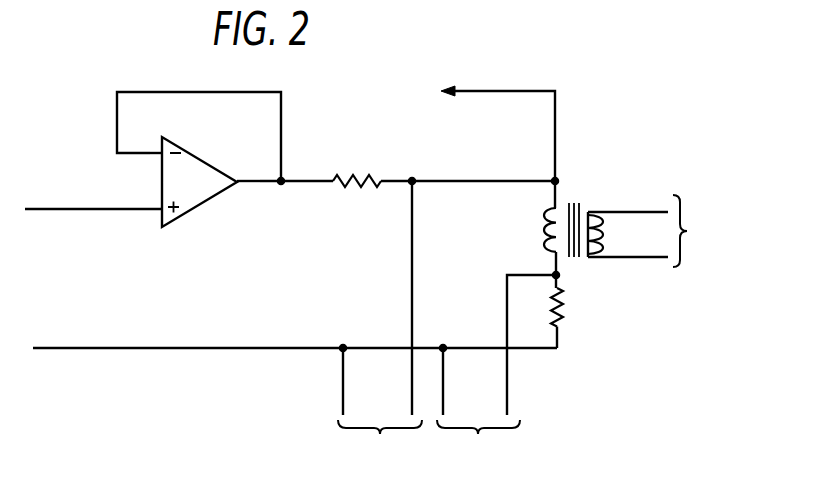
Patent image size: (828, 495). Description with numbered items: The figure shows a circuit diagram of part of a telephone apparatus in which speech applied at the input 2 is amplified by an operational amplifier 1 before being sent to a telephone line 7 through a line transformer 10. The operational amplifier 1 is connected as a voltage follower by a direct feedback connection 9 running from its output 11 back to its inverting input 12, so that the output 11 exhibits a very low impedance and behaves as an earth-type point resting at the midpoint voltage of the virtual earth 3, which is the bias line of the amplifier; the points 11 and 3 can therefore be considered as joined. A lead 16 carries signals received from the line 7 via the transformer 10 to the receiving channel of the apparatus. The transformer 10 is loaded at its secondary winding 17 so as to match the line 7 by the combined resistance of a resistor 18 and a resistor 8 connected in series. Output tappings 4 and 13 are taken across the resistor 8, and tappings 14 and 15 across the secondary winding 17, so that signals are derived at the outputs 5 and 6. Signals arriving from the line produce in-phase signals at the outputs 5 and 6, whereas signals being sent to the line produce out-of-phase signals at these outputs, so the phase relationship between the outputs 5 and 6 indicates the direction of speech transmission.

The operational amplifier 1 is at (186, 212).
The input 2 is at (93, 192).
The midpoint potential line 3 is at (295, 333).
The output tapping 4 is at (343, 387).
The output 5 is at (380, 441).
The output 6 is at (478, 441).
The telephone line 7 is at (667, 231).
The resistor 8 is at (362, 192).
The direct feedback connection 9 is at (182, 93).
The line transformer 10 is at (568, 187).
The output 11 is at (247, 197).
The inverting input 12 is at (150, 141).
The output tapping 13 is at (415, 377).
The output tapping 14 is at (443, 377).
The output tapping 15 is at (508, 377).
The lead 16 is at (498, 122).
The secondary winding 17 is at (545, 231).
The resistor 18 is at (551, 318).